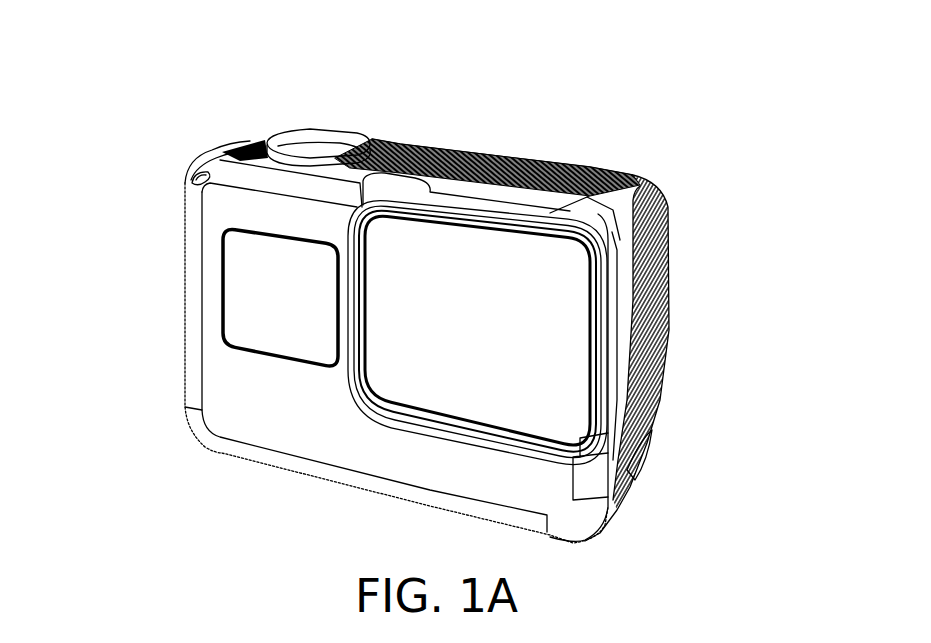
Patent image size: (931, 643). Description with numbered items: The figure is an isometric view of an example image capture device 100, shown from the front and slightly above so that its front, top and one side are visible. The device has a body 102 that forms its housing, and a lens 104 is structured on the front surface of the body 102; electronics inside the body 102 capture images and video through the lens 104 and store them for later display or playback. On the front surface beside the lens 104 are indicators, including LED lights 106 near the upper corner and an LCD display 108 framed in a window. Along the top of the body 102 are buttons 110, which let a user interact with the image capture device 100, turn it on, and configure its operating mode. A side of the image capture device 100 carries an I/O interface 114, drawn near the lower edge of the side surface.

The image capture device 100 is at (778, 190).
The body 102 is at (582, 158).
The lens 104 is at (550, 347).
The LED lights 106 is at (188, 168).
The LCD display 108 is at (232, 305).
The buttons 110 is at (307, 116).
The I/O interface 114 is at (654, 444).